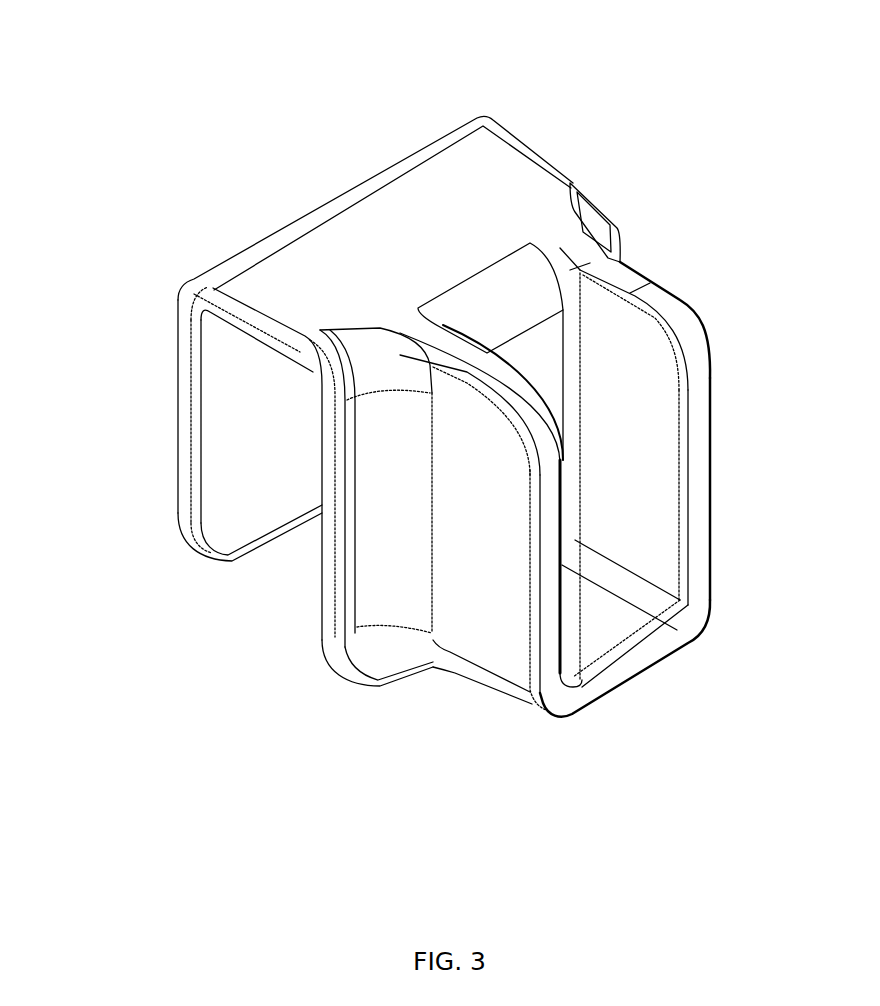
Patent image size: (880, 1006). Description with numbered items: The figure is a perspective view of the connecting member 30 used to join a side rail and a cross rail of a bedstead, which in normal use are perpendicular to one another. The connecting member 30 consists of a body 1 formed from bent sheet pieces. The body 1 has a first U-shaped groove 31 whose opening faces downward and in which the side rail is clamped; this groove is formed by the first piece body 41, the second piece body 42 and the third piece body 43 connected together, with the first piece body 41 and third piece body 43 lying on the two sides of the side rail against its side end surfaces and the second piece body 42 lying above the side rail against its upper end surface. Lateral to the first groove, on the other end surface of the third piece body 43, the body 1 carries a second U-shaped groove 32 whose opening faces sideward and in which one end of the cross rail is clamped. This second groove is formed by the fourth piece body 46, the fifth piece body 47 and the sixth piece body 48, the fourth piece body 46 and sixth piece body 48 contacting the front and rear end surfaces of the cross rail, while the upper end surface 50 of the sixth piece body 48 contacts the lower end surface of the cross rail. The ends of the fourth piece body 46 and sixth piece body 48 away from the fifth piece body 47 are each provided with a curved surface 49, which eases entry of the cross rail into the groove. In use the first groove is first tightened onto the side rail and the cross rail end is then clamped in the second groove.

The body 1 is at (405, 207).
The connecting member 30 is at (688, 900).
The first U-shaped groove 31 is at (295, 478).
The second U-shaped groove 32 is at (615, 505).
The first piece body 41 is at (177, 383).
The second piece body 42 is at (533, 150).
The third piece body 43 is at (323, 650).
The fourth piece body 46 is at (530, 582).
The fifth piece body 47 is at (647, 672).
The sixth piece body 48 is at (712, 458).
The curved surface 49 is at (683, 327).
The upper end surface 50 is at (620, 263).